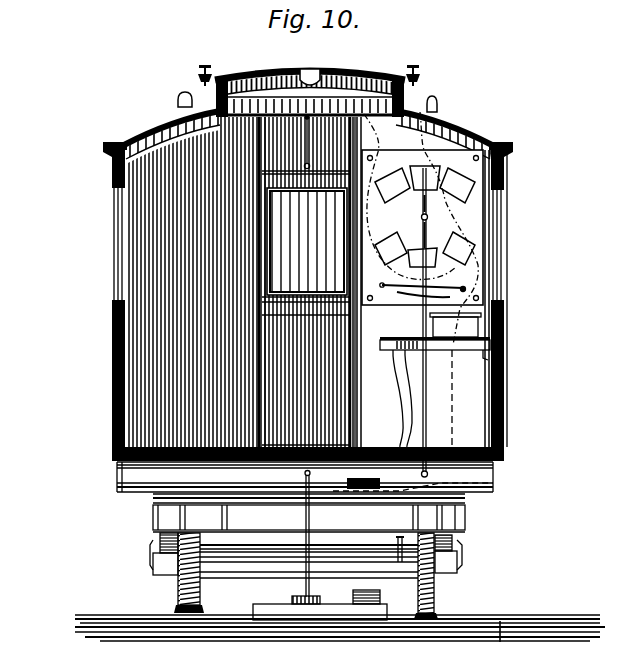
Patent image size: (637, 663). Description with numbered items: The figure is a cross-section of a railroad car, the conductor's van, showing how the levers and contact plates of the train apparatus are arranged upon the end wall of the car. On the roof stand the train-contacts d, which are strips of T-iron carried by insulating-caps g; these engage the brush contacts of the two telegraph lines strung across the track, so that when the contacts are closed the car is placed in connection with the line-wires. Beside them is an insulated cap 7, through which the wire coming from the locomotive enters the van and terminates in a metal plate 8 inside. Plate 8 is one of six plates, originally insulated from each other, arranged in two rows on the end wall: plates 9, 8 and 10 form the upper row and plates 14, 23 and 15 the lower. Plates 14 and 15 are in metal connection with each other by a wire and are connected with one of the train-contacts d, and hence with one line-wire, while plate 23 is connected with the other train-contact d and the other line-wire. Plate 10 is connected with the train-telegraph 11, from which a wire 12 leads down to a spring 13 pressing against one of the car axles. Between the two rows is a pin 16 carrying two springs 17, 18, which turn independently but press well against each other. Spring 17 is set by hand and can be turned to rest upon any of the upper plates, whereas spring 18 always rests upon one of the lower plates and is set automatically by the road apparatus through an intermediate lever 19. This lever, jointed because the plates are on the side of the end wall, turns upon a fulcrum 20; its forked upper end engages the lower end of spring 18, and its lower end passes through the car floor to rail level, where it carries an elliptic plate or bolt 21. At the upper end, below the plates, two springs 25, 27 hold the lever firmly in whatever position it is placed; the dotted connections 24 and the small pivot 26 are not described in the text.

The insulated cap 7 is at (437, 104).
The metal plate 8 is at (425, 178).
The metal plate 9 is at (392, 185).
The metal plate 10 is at (457, 185).
The train-telegraph 11 is at (455, 325).
The wire 12 is at (460, 398).
The spring 13 is at (407, 549).
The metal plate 14 is at (391, 248).
The metal plate 15 is at (459, 248).
The pin 16 is at (428, 217).
The spring 17 is at (416, 203).
The spring 18 is at (416, 235).
The intermediate lever 19 is at (426, 405).
The fulcrum 20 is at (433, 478).
The elliptic plate or bolt 21 is at (320, 546).
The metal plate 23 is at (422, 257).
The dotted circuit wires 24 is at (421, 228).
The spring 25 is at (455, 282).
The lever pivot 26 is at (412, 287).
The spring 27 is at (423, 299).
The train-contacts d is at (198, 70).
The insulating-caps g is at (198, 80).